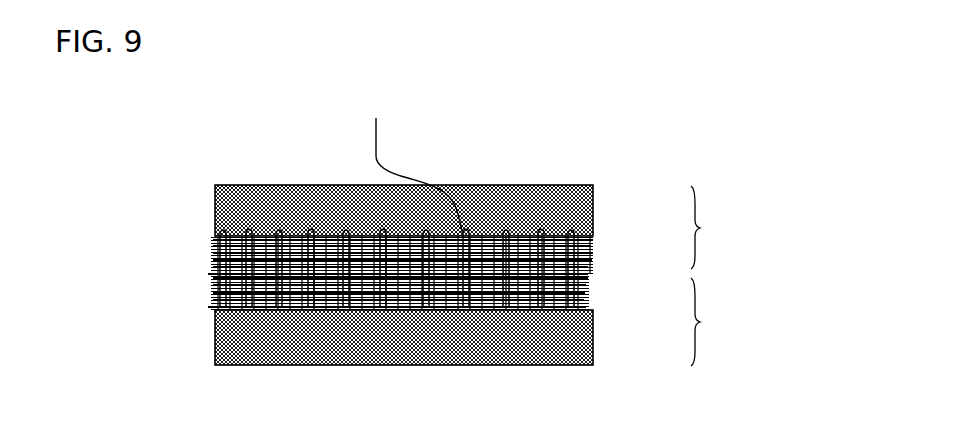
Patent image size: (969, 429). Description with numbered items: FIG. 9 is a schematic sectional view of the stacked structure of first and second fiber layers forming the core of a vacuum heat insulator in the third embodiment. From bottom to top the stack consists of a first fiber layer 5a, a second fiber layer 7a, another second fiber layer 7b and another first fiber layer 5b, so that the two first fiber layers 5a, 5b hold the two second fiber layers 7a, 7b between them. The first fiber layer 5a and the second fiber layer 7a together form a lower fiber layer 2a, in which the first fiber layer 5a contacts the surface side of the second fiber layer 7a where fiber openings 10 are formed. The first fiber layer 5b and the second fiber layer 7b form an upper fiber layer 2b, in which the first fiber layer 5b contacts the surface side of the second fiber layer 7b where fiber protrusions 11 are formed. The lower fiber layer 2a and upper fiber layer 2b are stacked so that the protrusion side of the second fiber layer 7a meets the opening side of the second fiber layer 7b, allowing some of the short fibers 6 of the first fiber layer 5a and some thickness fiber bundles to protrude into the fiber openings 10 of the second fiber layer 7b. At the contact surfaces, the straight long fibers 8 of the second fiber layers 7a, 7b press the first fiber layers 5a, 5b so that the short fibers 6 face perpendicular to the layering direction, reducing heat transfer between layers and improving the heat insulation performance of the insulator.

The lower fiber layer 2a is at (712, 322).
The upper fiber layer 2b is at (712, 227).
The first fiber layer 5a is at (592, 334).
The first fiber layer 5b is at (590, 192).
The short fibers 6 is at (232, 328).
The second fiber layer 7a is at (585, 296).
The second fiber layer 7b is at (588, 239).
The straight long fibers 8 is at (205, 282).
The fiber openings 10 is at (205, 312).
The fiber protrusions 11 is at (415, 159).